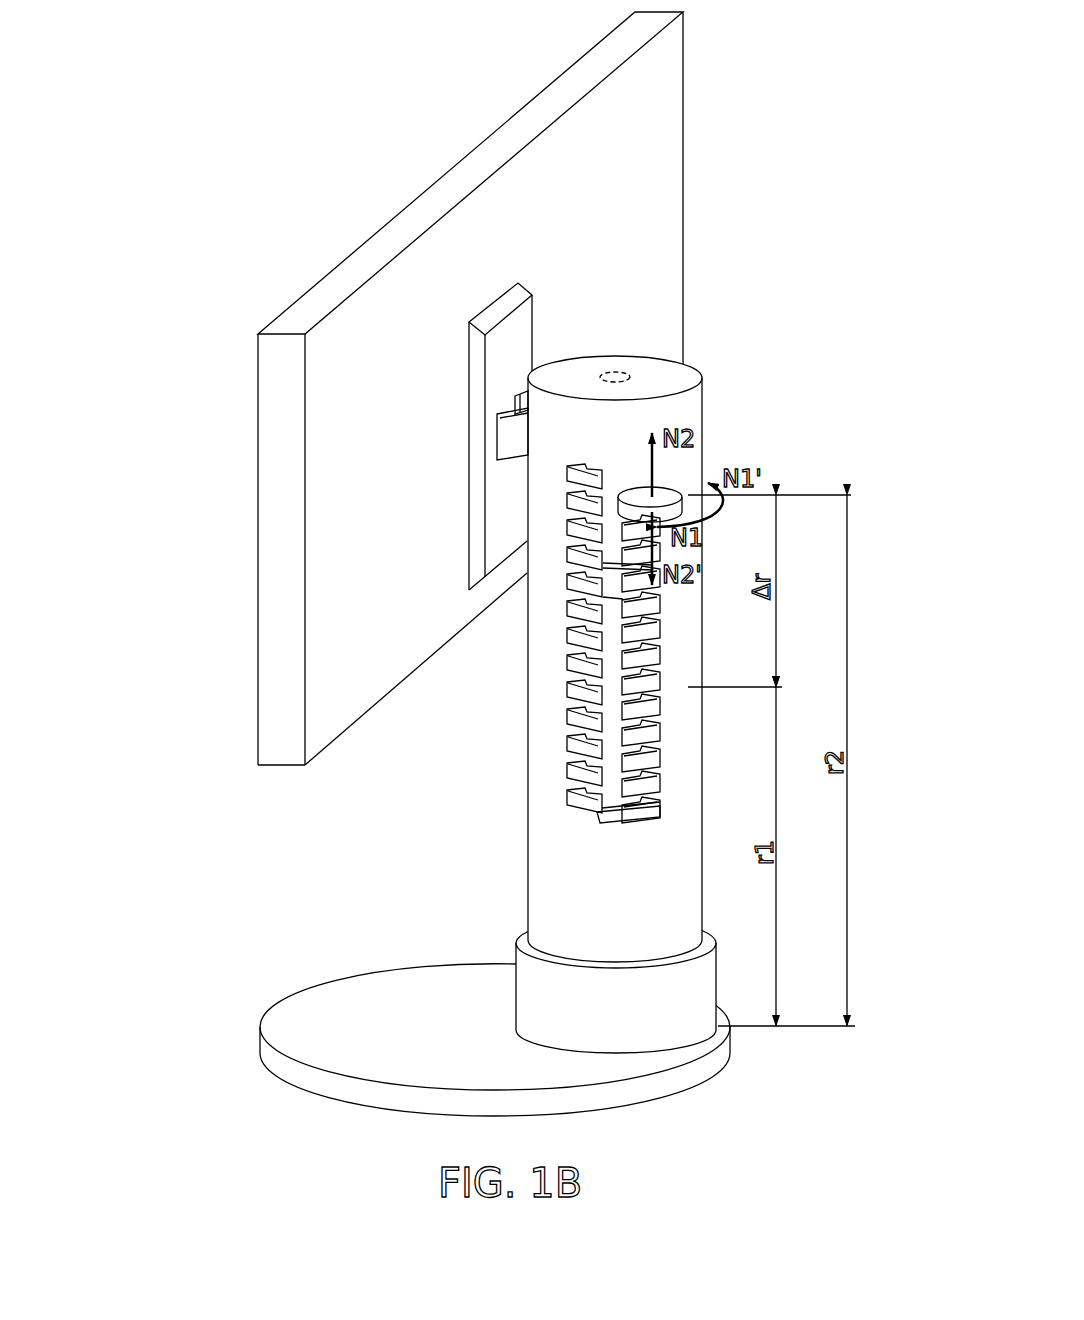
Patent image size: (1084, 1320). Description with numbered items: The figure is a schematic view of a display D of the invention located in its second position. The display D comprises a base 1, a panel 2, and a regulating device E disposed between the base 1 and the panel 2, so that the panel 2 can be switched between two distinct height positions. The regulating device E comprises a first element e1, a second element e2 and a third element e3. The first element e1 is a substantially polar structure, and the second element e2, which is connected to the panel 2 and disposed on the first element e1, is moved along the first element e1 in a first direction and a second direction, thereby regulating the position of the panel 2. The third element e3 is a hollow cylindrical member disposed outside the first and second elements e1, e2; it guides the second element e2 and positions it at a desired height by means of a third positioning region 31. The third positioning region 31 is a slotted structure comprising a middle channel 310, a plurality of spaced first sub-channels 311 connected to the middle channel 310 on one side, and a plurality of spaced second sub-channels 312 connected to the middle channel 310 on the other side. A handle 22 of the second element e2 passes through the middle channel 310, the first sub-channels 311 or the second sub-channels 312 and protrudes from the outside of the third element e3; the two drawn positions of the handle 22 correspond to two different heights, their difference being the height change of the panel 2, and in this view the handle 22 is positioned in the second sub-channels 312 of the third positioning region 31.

The display D is at (248, 42).
The base 1 is at (286, 1090).
The panel 2 is at (286, 302).
The handle 22 is at (667, 494).
The third positioning region 31 is at (182, 545).
The middle channel 310 is at (613, 768).
The first sub-channels 311 is at (587, 768).
The second sub-channels 312 is at (628, 750).
The regulating device E is at (783, 228).
The first element e1 is at (617, 372).
The second element e2 is at (612, 493).
The third element e3 is at (705, 388).